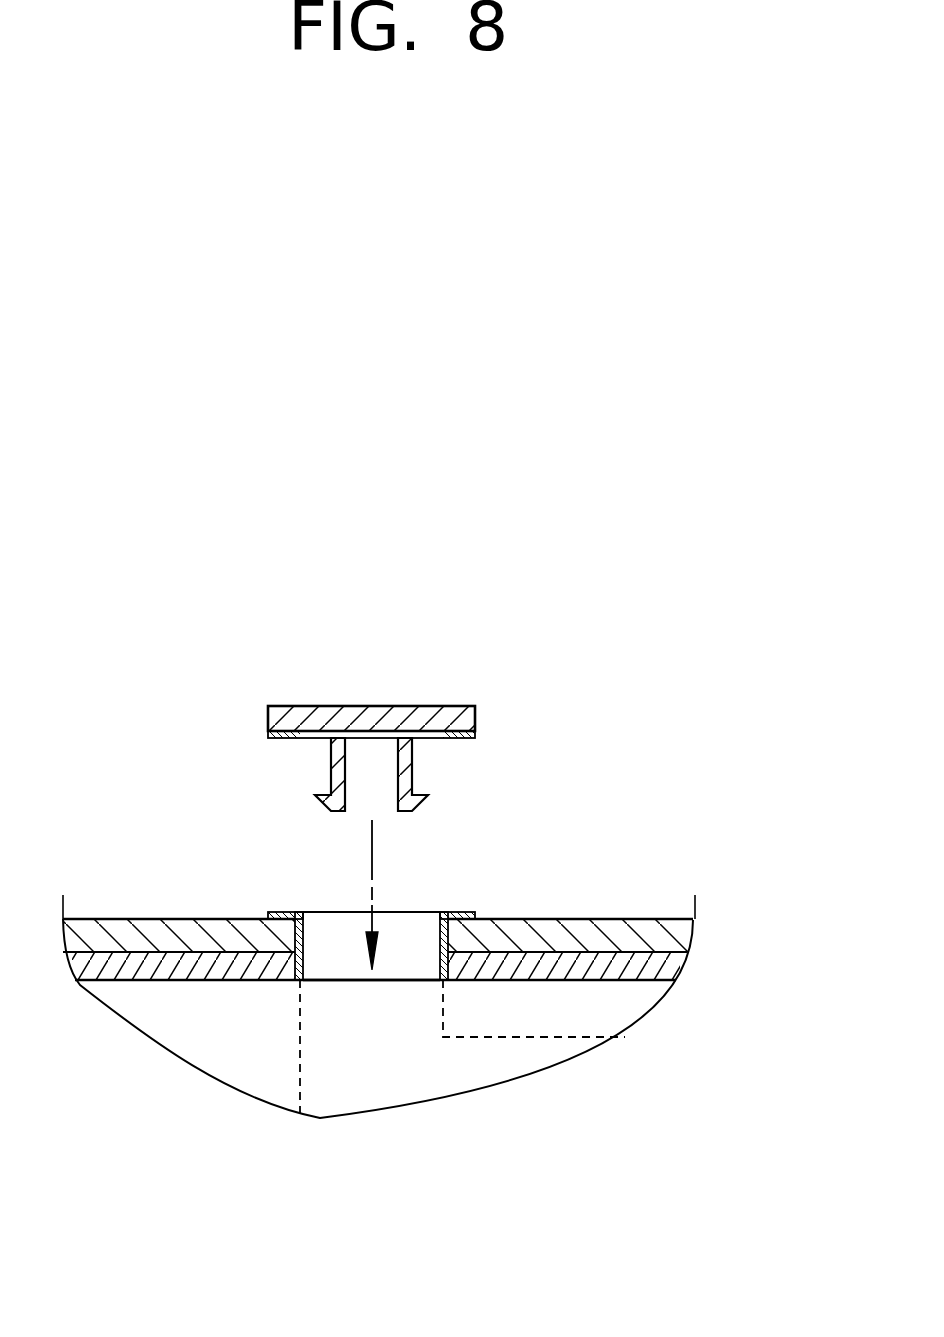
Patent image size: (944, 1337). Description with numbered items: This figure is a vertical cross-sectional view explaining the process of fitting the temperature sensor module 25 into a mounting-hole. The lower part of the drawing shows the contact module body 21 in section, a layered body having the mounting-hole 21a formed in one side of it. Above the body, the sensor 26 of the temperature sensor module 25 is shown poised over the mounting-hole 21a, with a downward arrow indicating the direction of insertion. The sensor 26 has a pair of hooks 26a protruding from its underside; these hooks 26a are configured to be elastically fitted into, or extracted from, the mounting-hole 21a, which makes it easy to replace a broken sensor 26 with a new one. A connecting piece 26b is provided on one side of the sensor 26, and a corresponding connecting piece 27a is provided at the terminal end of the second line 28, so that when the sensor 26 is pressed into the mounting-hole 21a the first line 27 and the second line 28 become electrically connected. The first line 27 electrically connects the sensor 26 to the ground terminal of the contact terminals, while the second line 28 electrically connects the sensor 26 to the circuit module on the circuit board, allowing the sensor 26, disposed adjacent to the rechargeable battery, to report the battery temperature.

The contact module body 21 is at (646, 927).
The mounting-hole 21a is at (392, 951).
The temperature sensor module 25 is at (560, 765).
The sensor 26 is at (297, 706).
The hooks 26a is at (318, 797).
The connecting piece 26b is at (283, 738).
The first line 27 is at (500, 1037).
The connecting piece 27a is at (462, 912).
The second line 28 is at (302, 1063).